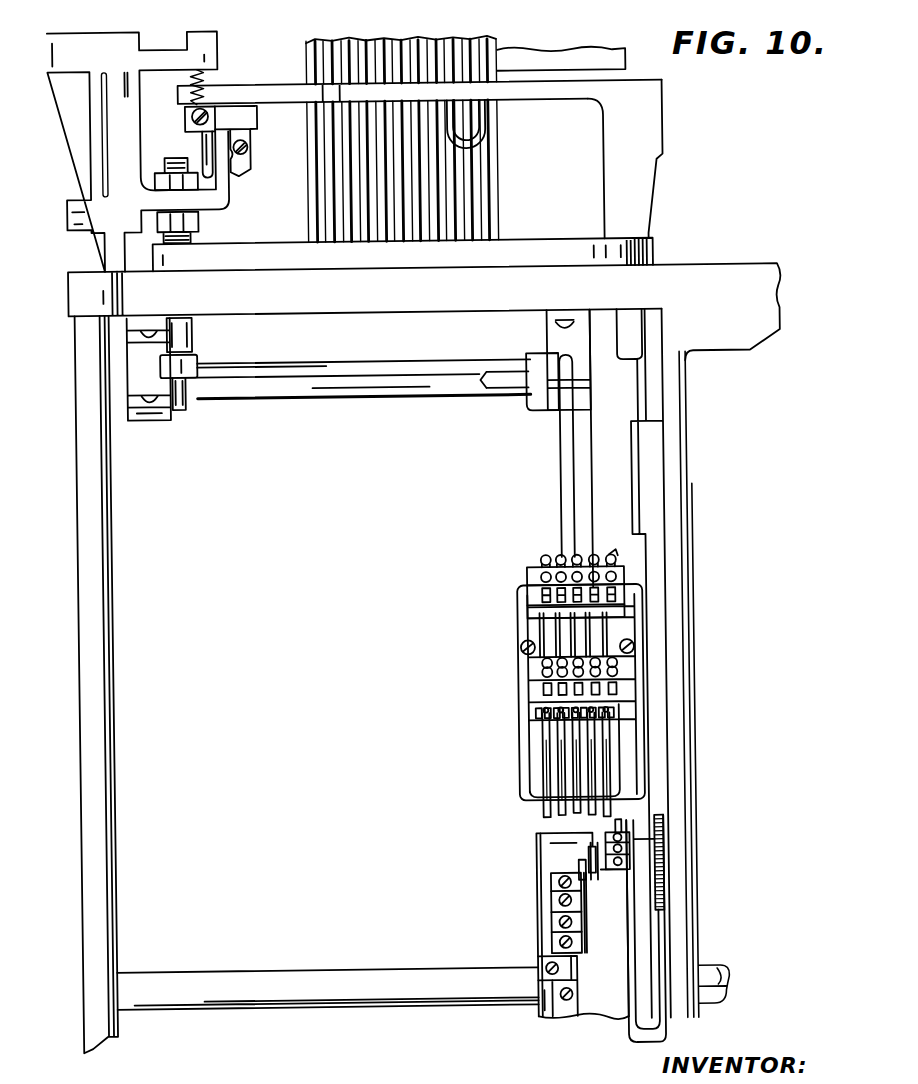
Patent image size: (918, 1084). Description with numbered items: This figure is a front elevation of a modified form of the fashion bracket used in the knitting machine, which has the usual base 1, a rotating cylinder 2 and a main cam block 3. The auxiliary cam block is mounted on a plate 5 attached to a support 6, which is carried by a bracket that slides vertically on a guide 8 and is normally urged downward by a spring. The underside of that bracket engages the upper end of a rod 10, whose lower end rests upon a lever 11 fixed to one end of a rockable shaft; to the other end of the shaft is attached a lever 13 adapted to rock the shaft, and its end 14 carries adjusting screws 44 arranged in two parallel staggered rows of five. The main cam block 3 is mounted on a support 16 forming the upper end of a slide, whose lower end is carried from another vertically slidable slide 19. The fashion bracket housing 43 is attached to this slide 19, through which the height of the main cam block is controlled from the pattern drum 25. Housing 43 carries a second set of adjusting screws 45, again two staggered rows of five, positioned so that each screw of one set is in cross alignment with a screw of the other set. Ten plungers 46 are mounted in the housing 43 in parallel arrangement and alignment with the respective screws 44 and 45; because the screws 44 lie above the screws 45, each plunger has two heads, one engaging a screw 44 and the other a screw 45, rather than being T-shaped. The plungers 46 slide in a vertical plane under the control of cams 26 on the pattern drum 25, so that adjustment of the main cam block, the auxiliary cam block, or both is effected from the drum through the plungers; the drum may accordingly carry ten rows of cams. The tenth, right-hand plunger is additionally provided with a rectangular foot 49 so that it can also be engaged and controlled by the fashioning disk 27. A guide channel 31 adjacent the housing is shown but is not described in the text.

The base 1 is at (333, 302).
The rotating cylinder 2 is at (314, 216).
The main cam block 3 is at (630, 60).
The plate 5 is at (257, 86).
The support 6 is at (253, 133).
The guide 8 is at (110, 248).
The rod 10 is at (196, 336).
The lever 11 is at (201, 360).
The lever 13 is at (565, 505).
The end of lever 14 is at (530, 571).
The support 16 is at (561, 81).
The slide 19 is at (649, 399).
The pattern drum 25 is at (539, 868).
The cams 26 is at (549, 920).
The fashioning disk 27 is at (657, 854).
The guide channel 31 is at (646, 928).
The fashion bracket housing 43 is at (632, 731).
The adjusting screws 44 is at (619, 563).
The adjusting screws 45 is at (547, 665).
The plungers 46 is at (556, 817).
The rectangular foot 49 is at (632, 811).